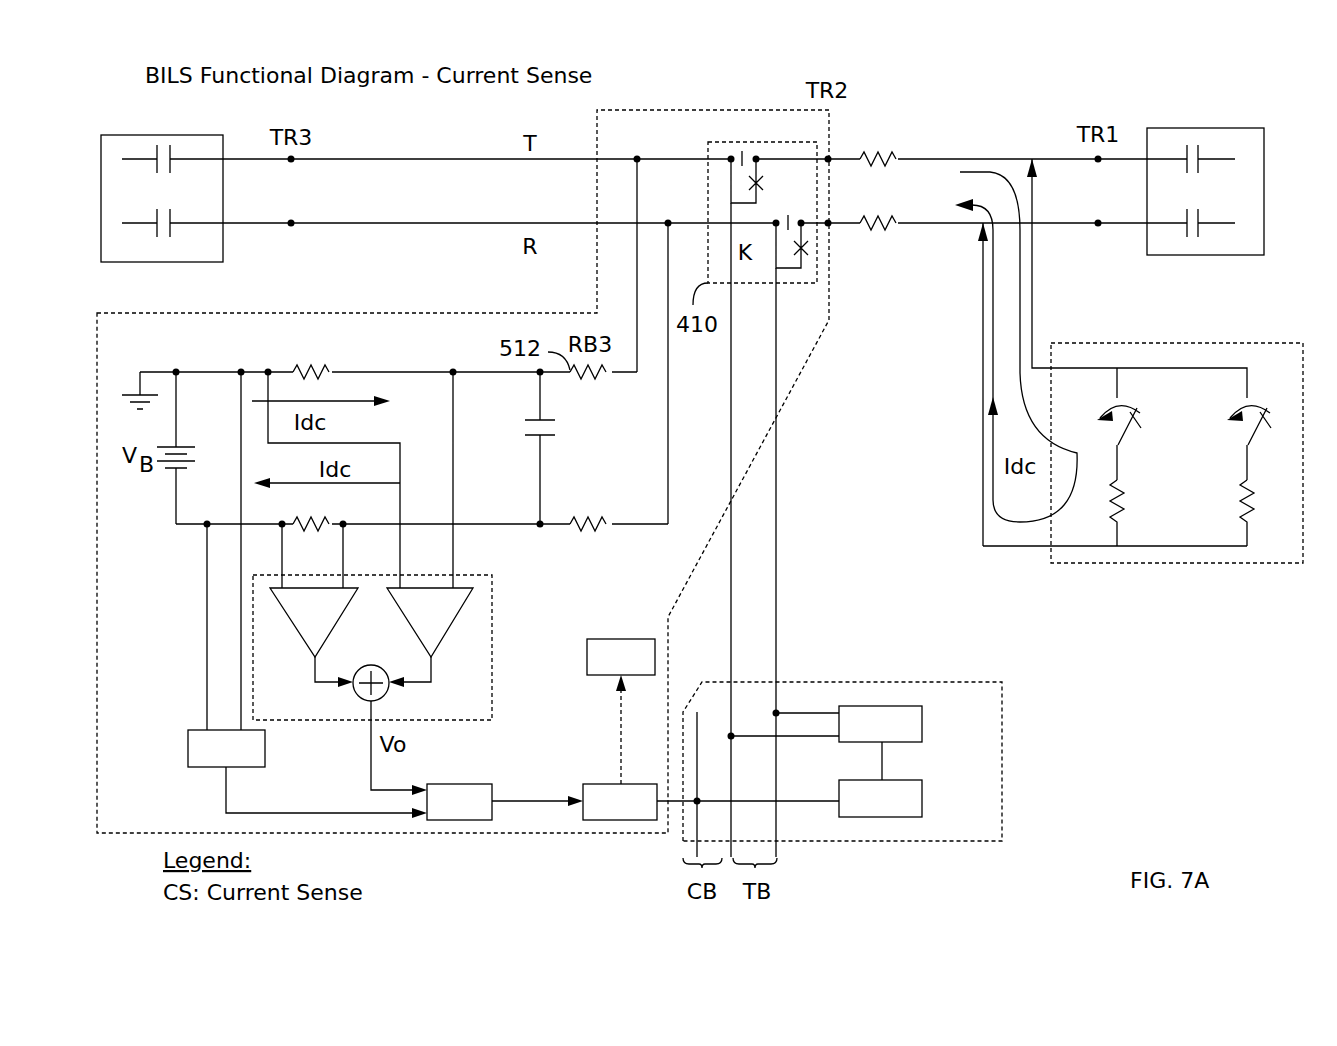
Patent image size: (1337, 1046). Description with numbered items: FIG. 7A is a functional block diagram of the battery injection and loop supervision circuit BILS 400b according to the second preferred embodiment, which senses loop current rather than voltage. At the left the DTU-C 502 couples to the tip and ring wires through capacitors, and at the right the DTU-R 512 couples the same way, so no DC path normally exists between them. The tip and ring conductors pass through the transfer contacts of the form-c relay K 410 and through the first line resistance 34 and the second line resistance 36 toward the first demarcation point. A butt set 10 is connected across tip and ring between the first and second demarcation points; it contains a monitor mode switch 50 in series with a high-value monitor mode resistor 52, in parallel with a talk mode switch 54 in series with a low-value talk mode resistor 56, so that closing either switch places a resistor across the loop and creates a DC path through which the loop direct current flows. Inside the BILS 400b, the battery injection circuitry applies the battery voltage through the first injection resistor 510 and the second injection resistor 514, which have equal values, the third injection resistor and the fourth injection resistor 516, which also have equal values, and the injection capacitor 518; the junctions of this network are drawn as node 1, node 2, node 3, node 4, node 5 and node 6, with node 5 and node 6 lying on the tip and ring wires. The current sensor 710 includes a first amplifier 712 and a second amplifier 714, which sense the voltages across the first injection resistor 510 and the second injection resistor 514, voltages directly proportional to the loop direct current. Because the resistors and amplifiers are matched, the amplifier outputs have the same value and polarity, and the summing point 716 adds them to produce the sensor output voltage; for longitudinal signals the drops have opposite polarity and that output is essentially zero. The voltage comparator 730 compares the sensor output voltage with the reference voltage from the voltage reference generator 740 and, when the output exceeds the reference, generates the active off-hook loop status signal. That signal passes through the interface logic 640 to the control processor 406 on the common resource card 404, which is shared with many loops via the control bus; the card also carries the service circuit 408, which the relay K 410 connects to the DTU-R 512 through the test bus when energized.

The DTU-C 502 is at (226, 244).
The DTU-R 512 is at (1180, 128).
The line resistance RL1 34 is at (895, 158).
The line resistance RL2 36 is at (895, 228).
The node 5 is at (637, 248).
The node 6 is at (668, 358).
The node 1 is at (222, 357).
The node 2 is at (273, 510).
The node 3 is at (452, 357).
The node 4 is at (502, 511).
The butt set 10 is at (1141, 379).
The monitor mode switch 50 is at (1130, 440).
The monitor mode resistor 52 is at (1110, 500).
The talk mode switch 54 is at (1260, 440).
The talk mode resistor 56 is at (1240, 500).
The BILS 400b is at (510, 312).
The form-c relay 410 is at (621, 639).
The resistor Rb1 510 is at (325, 371).
The resistor Rb2 514 is at (325, 523).
The resistor Rb4 516 is at (575, 530).
The capacitor C1 518 is at (555, 437).
The current sensor 710 is at (400, 647).
The amplifier A1 712 is at (452, 623).
The amplifier A2 714 is at (293, 622).
The summing point S1 716 is at (386, 697).
The voltage comparator 730 is at (458, 784).
The voltage reference generator 740 is at (188, 750).
The interface logic 640 is at (593, 784).
The common resource card 404 is at (886, 748).
The control processor 406 is at (922, 797).
The service circuit 408 is at (922, 724).